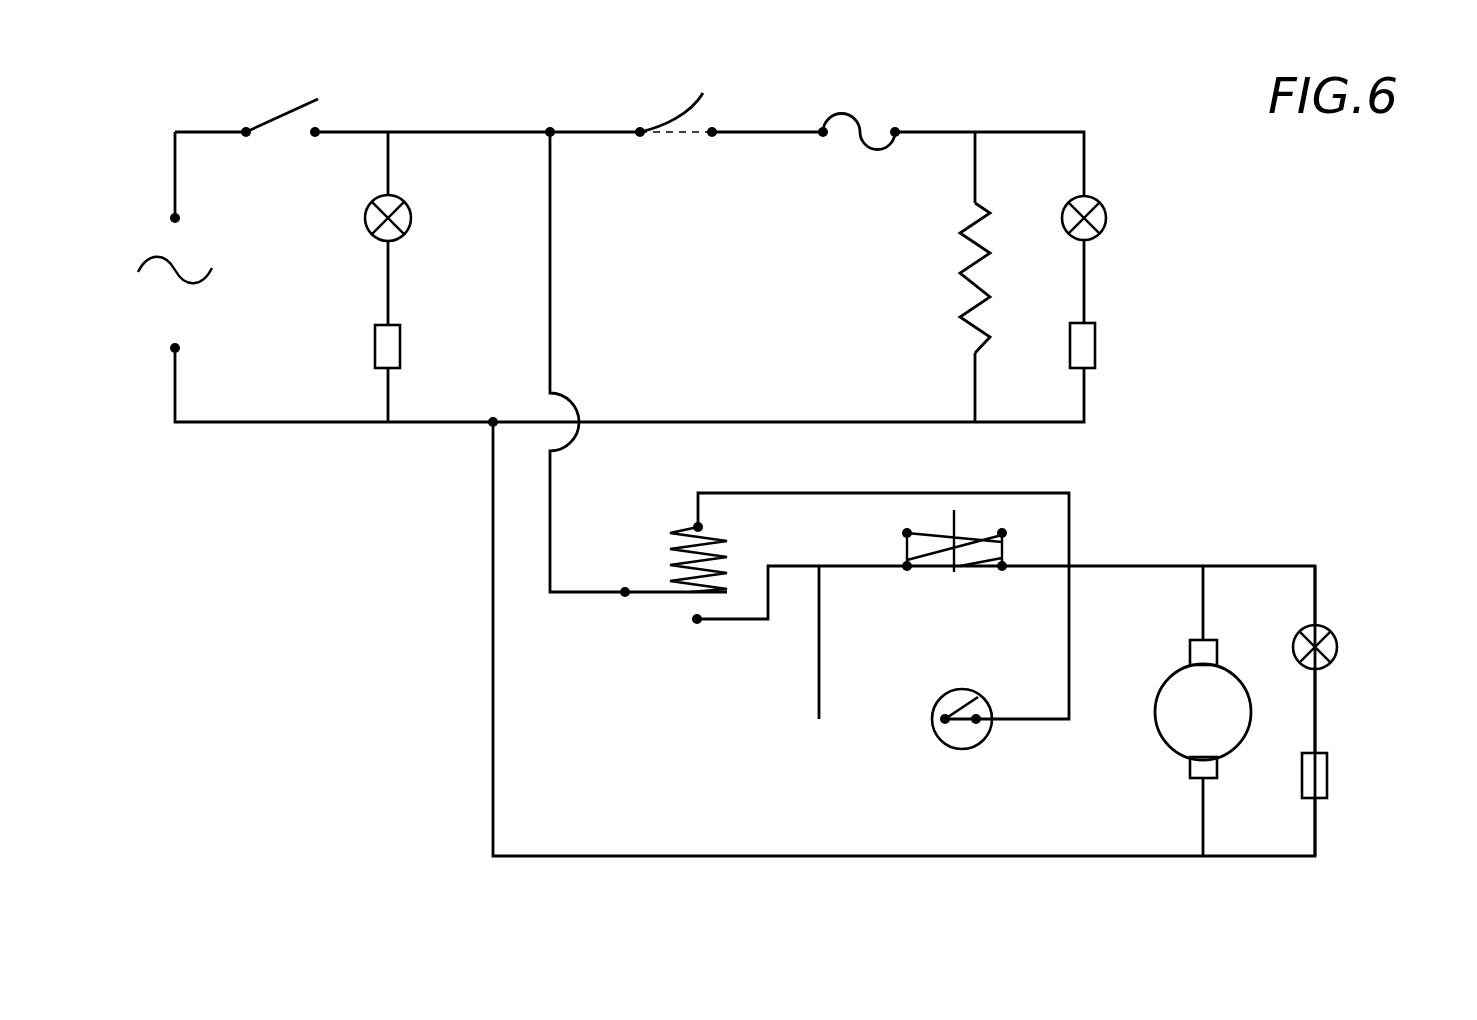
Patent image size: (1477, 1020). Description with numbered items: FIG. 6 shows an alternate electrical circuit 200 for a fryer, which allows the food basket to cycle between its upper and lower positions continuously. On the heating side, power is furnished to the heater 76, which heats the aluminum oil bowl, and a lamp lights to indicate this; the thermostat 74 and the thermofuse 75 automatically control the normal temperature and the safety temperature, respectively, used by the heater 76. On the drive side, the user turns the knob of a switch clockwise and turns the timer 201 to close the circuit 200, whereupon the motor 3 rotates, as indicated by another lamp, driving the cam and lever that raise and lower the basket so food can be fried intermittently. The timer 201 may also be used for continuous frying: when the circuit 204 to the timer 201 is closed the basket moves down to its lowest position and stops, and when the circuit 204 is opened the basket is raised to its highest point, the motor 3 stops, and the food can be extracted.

The circuit 200 is at (1348, 422).
The thermostat 74 is at (690, 107).
The thermofuse 75 is at (893, 128).
The heater 76 is at (963, 303).
The circuit 204 is at (550, 308).
The timer 201 is at (933, 712).
The motor 3 is at (1160, 735).